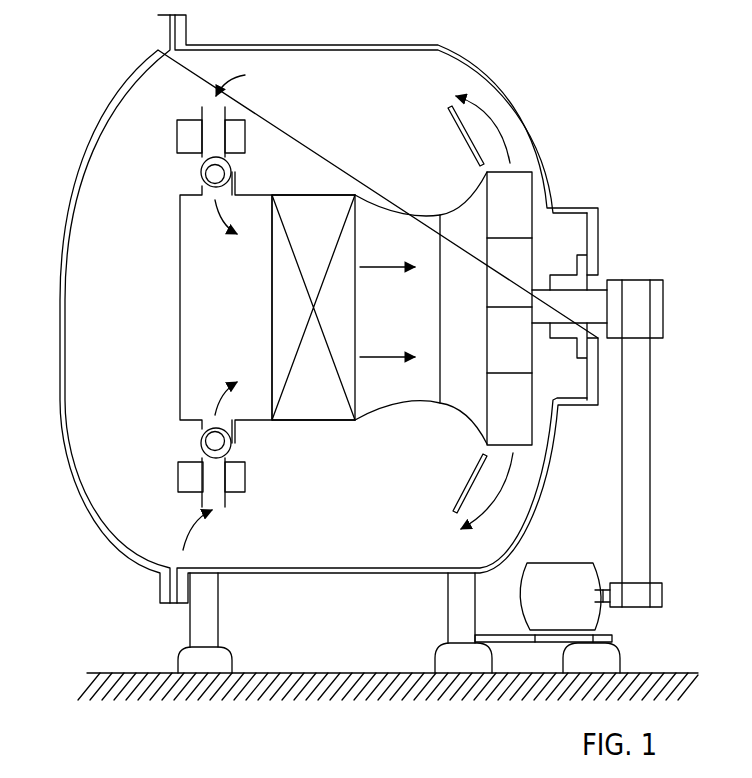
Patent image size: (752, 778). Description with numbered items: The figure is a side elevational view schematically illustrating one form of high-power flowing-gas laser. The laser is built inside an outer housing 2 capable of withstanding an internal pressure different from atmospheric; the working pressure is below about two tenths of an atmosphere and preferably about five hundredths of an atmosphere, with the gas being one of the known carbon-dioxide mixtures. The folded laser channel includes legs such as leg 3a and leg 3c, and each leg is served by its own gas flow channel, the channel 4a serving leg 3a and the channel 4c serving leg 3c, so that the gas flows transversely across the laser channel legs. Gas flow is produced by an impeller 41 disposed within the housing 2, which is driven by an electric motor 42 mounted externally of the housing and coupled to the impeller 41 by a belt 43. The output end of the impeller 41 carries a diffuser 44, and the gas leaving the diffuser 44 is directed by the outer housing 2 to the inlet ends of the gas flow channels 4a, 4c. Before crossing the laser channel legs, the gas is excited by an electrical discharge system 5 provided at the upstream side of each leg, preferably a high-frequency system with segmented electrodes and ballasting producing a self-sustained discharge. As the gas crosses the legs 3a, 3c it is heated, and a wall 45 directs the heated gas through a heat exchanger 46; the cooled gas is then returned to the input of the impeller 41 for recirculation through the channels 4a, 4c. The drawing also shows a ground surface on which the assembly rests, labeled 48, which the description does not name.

The outer housing 2 is at (393, 45).
The leg of laser channel 3a is at (201, 178).
The leg of laser channel 3c is at (201, 440).
The gas flow channel 4a is at (228, 116).
The gas flow channel 4c is at (178, 488).
The electrical discharge system 5 is at (177, 128).
The impeller 41 is at (468, 198).
The electric motor 42 is at (558, 573).
The belt 43 is at (645, 406).
The diffuser 44 is at (466, 143).
The wall 45 is at (180, 353).
The heat exchanger 46 is at (343, 196).
The ground / foundation 48 is at (305, 673).